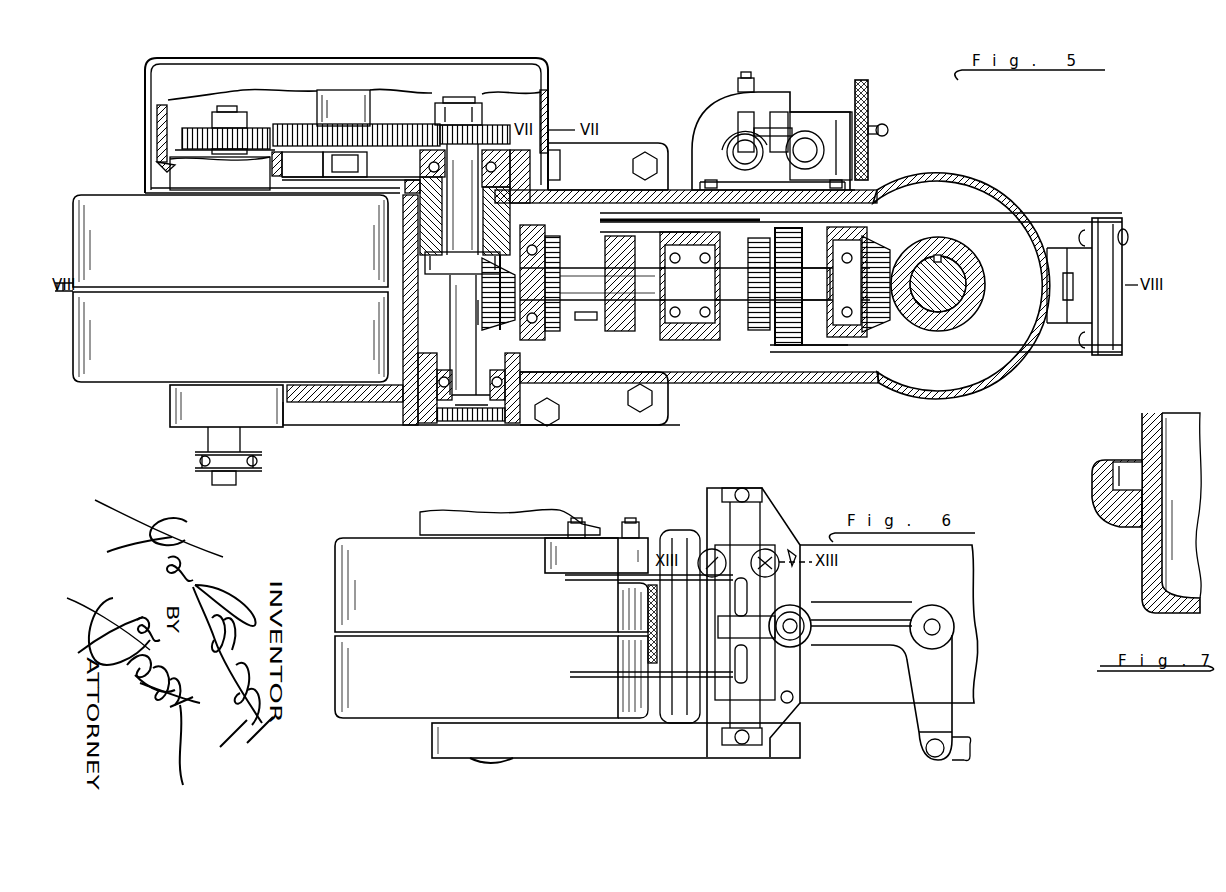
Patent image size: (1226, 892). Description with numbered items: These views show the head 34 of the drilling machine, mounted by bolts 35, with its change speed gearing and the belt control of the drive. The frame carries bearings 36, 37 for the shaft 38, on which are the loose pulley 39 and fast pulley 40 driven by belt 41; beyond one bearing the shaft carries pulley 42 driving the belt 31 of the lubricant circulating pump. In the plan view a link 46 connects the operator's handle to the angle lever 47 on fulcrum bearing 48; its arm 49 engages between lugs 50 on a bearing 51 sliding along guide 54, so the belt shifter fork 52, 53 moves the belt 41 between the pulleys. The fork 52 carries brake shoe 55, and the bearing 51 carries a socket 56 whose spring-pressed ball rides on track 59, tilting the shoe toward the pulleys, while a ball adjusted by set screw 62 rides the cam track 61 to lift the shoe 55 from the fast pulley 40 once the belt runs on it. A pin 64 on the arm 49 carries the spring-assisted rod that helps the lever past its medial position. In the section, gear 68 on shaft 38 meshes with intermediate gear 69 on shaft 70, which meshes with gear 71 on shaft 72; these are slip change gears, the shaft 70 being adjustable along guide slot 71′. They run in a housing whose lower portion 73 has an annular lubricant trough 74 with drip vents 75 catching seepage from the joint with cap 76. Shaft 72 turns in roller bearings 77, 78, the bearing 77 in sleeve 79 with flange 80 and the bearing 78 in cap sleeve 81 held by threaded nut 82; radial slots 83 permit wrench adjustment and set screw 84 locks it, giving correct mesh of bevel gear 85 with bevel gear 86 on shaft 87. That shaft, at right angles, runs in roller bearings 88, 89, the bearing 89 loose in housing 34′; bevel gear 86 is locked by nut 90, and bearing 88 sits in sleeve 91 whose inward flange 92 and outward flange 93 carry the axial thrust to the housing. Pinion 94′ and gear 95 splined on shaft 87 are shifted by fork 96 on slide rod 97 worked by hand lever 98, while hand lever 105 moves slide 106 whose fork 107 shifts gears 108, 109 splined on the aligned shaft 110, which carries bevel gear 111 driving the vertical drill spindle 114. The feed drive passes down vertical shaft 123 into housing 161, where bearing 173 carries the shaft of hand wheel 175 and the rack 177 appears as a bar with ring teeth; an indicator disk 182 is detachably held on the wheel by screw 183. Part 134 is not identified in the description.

In FIG. 5, the belt 31 is at (262, 462).
In FIG. 5, the head 34 is at (578, 195).
In FIG. 5, the housing 34′ is at (876, 236).
In FIG. 5, the bolts 35 is at (632, 155).
In FIG. 5, the bearing 36 is at (170, 410).
In FIG. 6, the bearing 36 is at (432, 745).
In FIG. 5, the bearing 37 is at (160, 172).
In FIG. 6, the bearing 37 is at (420, 513).
In FIG. 5, the shaft 38 is at (218, 485).
In FIG. 6, the shaft 38 is at (470, 762).
In FIG. 5, the loose pulley 39 is at (125, 382).
In FIG. 6, the loose pulley 39 is at (372, 722).
In FIG. 5, the fast pulley 40 is at (128, 208).
In FIG. 6, the fast pulley 40 is at (352, 541).
In FIG. 6, the belt 41 is at (640, 605).
In FIG. 5, the pulley 42 is at (260, 470).
In FIG. 6, the link 46 is at (965, 740).
In FIG. 6, the angle lever 47 is at (945, 668).
In FIG. 6, the fulcrum bearing 48 is at (937, 614).
In FIG. 6, the arm 49 is at (762, 605).
In FIG. 6, the lugs 50 is at (740, 658).
In FIG. 6, the bearing 51 is at (768, 668).
In FIG. 6, the belt shifter fork 52 is at (572, 672).
In FIG. 6, the belt shifter fork 53 is at (565, 575).
In FIG. 6, the guide 54 is at (755, 508).
In FIG. 6, the brake shoe 55 is at (545, 556).
In FIG. 6, the socket 56 is at (790, 545).
In FIG. 6, the track 59 is at (772, 590).
In FIG. 6, the track 61 is at (690, 555).
In FIG. 6, the set screw 62 is at (724, 558).
In FIG. 6, the pin 64 is at (800, 645).
In FIG. 5, the gear 68 is at (197, 140).
In FIG. 5, the intermediate gear 69 is at (390, 126).
In FIG. 5, the shaft 70 is at (352, 88).
In FIG. 5, the gear 71 is at (500, 128).
In FIG. 5, the guide slot 71′ is at (316, 178).
In FIG. 5, the shaft 72 is at (482, 98).
In FIG. 7, the housing 73 is at (1142, 543).
In FIG. 5, the lubricant receiving trough 74 is at (145, 123).
In FIG. 7, the lubricant receiving trough 74 is at (1136, 459).
In FIG. 7, the drip vents 75 is at (1143, 512).
In FIG. 5, the cap 76 is at (193, 82).
In FIG. 7, the cap 76 is at (1142, 442).
In FIG. 5, the roller bearing 77 is at (432, 180).
In FIG. 5, the roller bearing 78 is at (425, 382).
In FIG. 5, the sleeve 79 is at (430, 222).
In FIG. 5, the flange 80 is at (428, 160).
In FIG. 5, the cap sleeve 81 is at (405, 368).
In FIG. 5, the nut 82 is at (432, 355).
In FIG. 5, the radial slots 83 is at (445, 416).
In FIG. 5, the set screw 84 is at (512, 412).
In FIG. 5, the bevel gear 85 is at (457, 267).
In FIG. 5, the bevel gear 86 is at (478, 318).
In FIG. 5, the shaft 87 is at (566, 272).
In FIG. 5, the roller bearing 88 is at (546, 262).
In FIG. 5, the roller bearing 89 is at (708, 334).
In FIG. 5, the nut 90 is at (500, 290).
In FIG. 5, the sleeve 91 is at (545, 335).
In FIG. 5, the flange 92 is at (548, 322).
In FIG. 5, the flange 93 is at (524, 330).
In FIG. 5, the pinion 94′ is at (593, 322).
In FIG. 5, the gear 95 is at (632, 332).
In FIG. 5, the fork 96 is at (600, 228).
In FIG. 5, the slide rod 97 is at (1050, 216).
In FIG. 5, the hand lever 98 is at (1128, 237).
In FIG. 5, the hand lever 105 is at (1124, 342).
In FIG. 5, the slide 106 is at (948, 368).
In FIG. 5, the fork 107 is at (810, 335).
In FIG. 5, the gear 108 is at (840, 222).
In FIG. 5, the gear 109 is at (760, 330).
In FIG. 5, the shaft 110 is at (735, 300).
In FIG. 5, the bevel gear 111 is at (867, 287).
In FIG. 5, the vertical drill spindle 114 is at (986, 284).
In FIG. 5, the vertical shaft 123 is at (806, 138).
In FIG. 5, the connecting bar 134 is at (778, 128).
In FIG. 5, the housing 161 is at (716, 92).
In FIG. 5, the bearing 173 is at (776, 112).
In FIG. 5, the hand wheel 175 is at (866, 86).
In FIG. 5, the rack 177 is at (735, 150).
In FIG. 5, the indicator disk 182 is at (874, 126).
In FIG. 5, the screw 183 is at (888, 128).